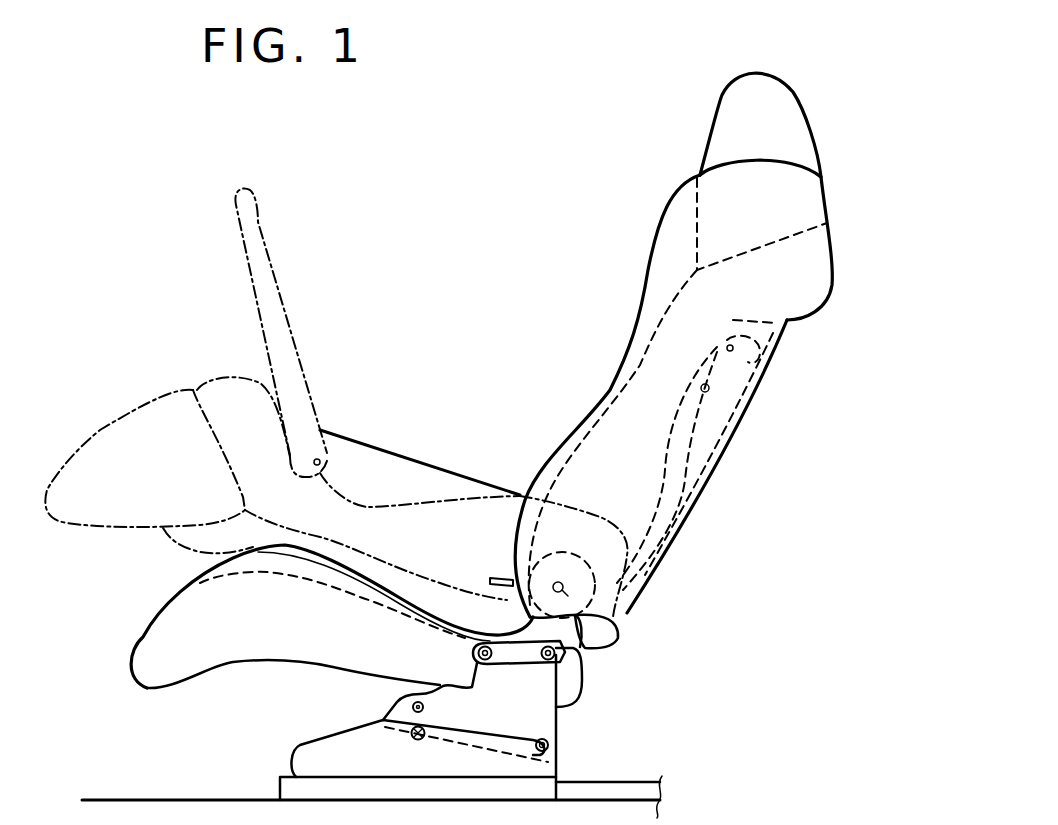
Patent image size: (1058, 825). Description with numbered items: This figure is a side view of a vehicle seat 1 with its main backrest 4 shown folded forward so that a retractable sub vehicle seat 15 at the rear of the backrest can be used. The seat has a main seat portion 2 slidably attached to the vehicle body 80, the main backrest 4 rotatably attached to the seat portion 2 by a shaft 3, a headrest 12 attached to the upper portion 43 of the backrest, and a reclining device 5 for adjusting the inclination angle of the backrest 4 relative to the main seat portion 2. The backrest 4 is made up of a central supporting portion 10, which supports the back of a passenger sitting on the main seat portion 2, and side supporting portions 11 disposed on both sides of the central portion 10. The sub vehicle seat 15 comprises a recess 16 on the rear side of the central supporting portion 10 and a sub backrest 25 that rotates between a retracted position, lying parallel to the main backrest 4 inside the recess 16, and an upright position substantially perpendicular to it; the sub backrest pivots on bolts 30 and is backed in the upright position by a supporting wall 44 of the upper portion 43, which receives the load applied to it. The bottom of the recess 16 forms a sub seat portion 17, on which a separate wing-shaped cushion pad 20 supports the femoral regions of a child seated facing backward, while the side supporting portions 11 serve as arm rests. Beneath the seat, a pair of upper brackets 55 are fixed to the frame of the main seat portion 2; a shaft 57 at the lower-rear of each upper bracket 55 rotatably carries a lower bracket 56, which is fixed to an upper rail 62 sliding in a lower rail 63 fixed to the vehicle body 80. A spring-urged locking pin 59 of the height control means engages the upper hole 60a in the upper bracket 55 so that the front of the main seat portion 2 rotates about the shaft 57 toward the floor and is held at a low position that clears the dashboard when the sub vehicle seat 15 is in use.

The vehicle seat 1 is at (54, 599).
The main seat portion 2 is at (230, 640).
The shaft 3 is at (613, 643).
The main backrest 4 is at (468, 527).
The reclining device 5 is at (590, 556).
The central supporting portion 10 is at (297, 530).
The side supporting portions 11 is at (353, 573).
The headrest 12 is at (83, 440).
The sub vehicle seat 15 is at (393, 380).
The recess 16 is at (350, 450).
The sub seat portion 17 is at (410, 500).
The cushion pad 20 is at (712, 389).
The sub backrest 25 is at (287, 307).
The bolts 30 is at (300, 460).
The upper portion 43 is at (833, 250).
The supporting wall 44 is at (768, 318).
The upper brackets 55 is at (537, 685).
The lower brackets 56 is at (320, 740).
The shaft 57 is at (553, 745).
The locking pin 59 is at (403, 733).
The upper hole 60a is at (415, 702).
The upper rails 62 is at (280, 790).
The lower rails 63 is at (643, 780).
The vehicle body 80 is at (150, 799).